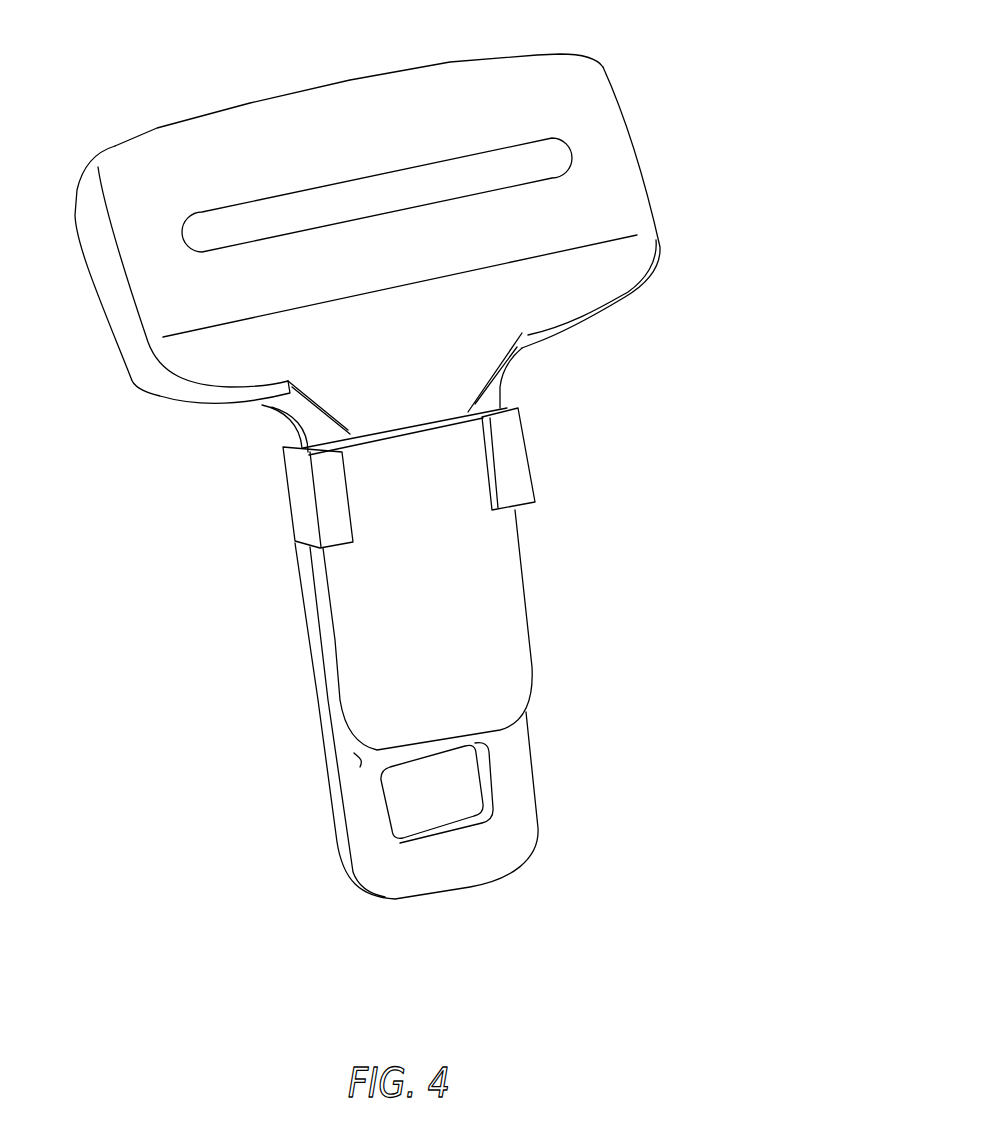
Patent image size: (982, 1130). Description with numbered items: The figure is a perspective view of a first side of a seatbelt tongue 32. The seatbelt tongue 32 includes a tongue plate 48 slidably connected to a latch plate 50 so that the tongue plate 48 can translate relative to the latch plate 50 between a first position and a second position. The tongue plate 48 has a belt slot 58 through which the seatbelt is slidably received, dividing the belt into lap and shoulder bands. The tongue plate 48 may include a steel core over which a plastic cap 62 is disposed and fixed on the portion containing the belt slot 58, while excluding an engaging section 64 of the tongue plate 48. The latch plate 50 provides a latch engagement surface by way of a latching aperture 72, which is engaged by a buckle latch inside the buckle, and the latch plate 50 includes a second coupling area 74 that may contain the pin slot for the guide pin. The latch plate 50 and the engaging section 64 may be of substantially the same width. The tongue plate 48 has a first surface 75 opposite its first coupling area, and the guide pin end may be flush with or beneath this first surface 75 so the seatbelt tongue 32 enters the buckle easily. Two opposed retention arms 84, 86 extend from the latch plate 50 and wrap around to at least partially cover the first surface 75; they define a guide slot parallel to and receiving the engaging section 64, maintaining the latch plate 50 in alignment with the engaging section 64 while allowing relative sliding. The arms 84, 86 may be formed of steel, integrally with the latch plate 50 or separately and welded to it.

The seatbelt tongue 32 is at (400, 452).
The tongue plate 48 is at (400, 253).
The latch plate 50 is at (440, 721).
The belt slot 58 is at (223, 247).
The plastic cap 62 is at (645, 172).
The engaging section 64 is at (455, 579).
The latching aperture 72 is at (387, 815).
The second coupling area 74 is at (356, 763).
The first surface 75 is at (441, 657).
The retention arm 84 is at (287, 508).
The retention arm 86 is at (533, 482).